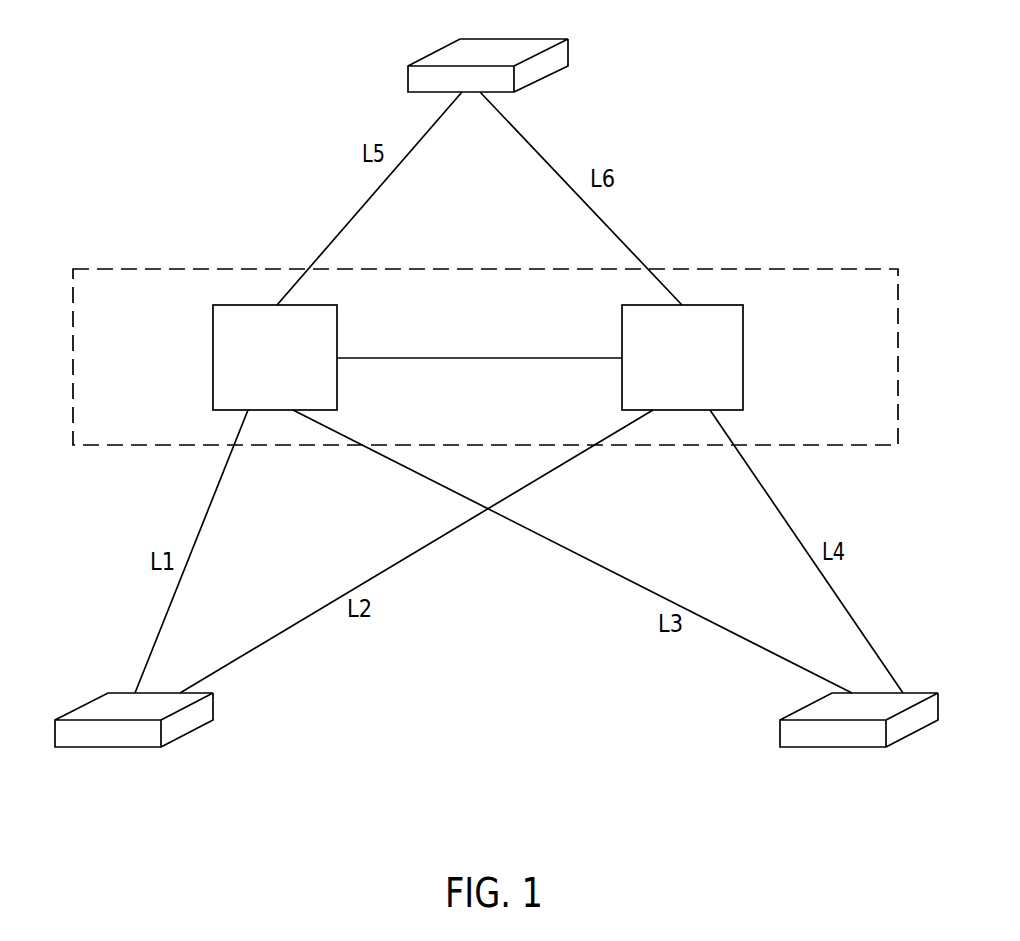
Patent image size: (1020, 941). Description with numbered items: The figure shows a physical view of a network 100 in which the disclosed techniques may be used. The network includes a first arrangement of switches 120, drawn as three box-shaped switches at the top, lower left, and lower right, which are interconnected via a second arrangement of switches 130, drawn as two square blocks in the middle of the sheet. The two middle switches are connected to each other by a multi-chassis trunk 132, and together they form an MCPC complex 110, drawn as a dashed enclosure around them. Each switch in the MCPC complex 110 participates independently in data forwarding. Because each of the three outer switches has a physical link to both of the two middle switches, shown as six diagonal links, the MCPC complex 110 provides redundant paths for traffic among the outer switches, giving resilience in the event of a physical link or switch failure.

The network system 100 is at (817, 22).
The MCPC complex 110 is at (842, 269).
The first arrangement of switches 120 is at (558, 70).
The second arrangement of switches 130 is at (242, 305).
The multi-chassis trunk 132 is at (422, 358).